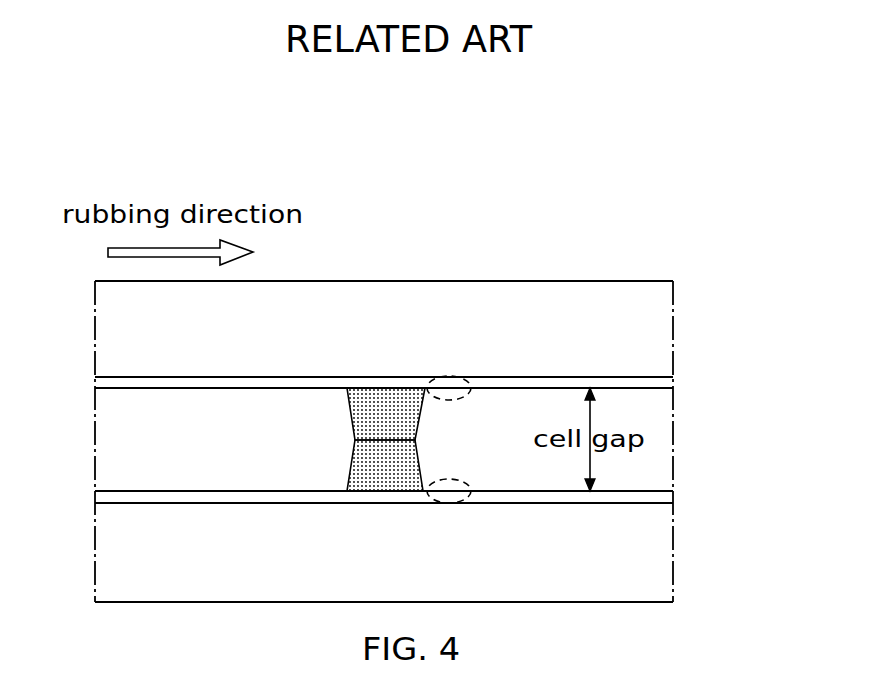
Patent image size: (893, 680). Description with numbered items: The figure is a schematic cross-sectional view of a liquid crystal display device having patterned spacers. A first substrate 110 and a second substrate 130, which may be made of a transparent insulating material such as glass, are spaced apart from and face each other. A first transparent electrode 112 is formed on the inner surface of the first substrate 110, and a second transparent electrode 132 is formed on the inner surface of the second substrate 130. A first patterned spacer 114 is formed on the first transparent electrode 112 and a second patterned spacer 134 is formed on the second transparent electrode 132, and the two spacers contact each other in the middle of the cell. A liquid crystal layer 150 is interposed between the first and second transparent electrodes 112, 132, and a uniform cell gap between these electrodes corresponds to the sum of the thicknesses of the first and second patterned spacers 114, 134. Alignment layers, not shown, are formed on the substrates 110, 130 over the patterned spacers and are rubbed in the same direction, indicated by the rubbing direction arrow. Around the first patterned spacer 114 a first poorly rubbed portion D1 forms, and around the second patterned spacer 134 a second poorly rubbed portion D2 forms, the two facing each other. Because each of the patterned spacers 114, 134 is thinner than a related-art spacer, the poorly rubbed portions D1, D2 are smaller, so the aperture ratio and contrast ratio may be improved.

The first substrate 110 is at (410, 567).
The first transparent electrode 112 is at (176, 505).
The first patterned spacer 114 is at (349, 470).
The second substrate 130 is at (410, 340).
The second transparent electrode 132 is at (203, 378).
The second patterned spacer 134 is at (350, 411).
The liquid crystal layer 150 is at (673, 447).
The first poorly rubbed portion D1 is at (455, 504).
The second poorly rubbed portion D2 is at (457, 376).